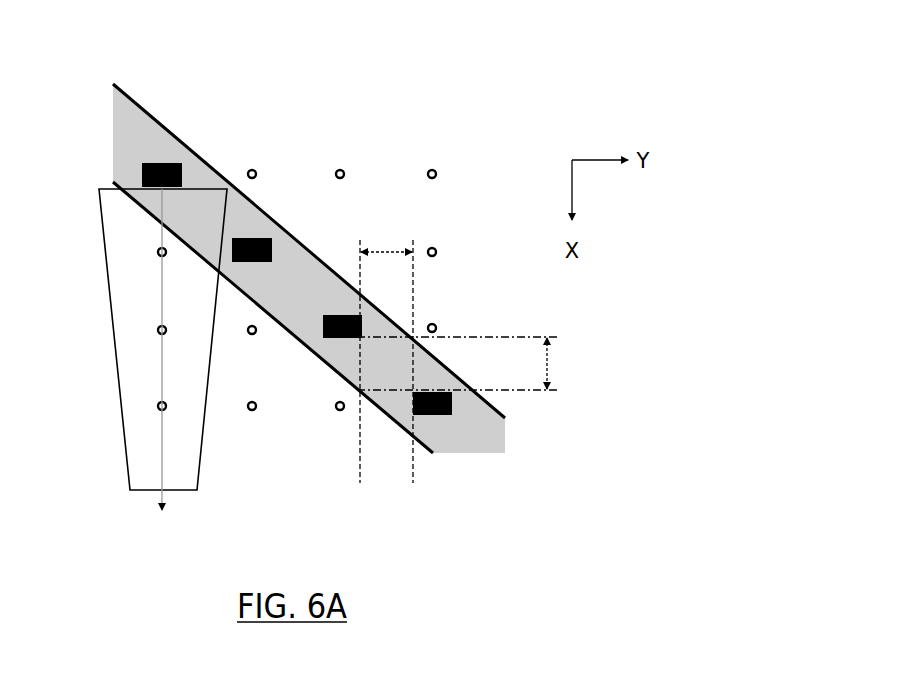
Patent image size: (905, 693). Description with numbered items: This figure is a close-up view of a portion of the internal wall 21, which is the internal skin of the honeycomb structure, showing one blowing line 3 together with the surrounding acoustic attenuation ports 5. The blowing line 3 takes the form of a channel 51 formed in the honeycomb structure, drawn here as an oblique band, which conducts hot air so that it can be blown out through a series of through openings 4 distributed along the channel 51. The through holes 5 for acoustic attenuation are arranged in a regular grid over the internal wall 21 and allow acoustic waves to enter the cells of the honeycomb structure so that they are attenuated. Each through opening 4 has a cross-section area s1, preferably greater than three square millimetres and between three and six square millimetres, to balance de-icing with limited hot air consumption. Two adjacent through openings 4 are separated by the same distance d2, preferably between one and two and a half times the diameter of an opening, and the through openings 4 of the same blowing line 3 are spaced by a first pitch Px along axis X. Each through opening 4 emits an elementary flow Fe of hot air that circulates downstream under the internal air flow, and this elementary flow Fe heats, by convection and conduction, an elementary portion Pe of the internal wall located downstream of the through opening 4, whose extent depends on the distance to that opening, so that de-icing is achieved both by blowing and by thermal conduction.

The internal wall 21 is at (330, 264).
The blowing line 3 is at (324, 255).
The through opening 4 is at (163, 163).
The acoustic attenuation port 5 is at (345, 173).
The channel 51 is at (482, 398).
The cross-section area s1 is at (254, 232).
The distance between through openings d2 is at (386, 348).
The first pitch Px is at (472, 363).
The elementary portion Pe is at (124, 343).
The elementary flow Fe is at (161, 373).